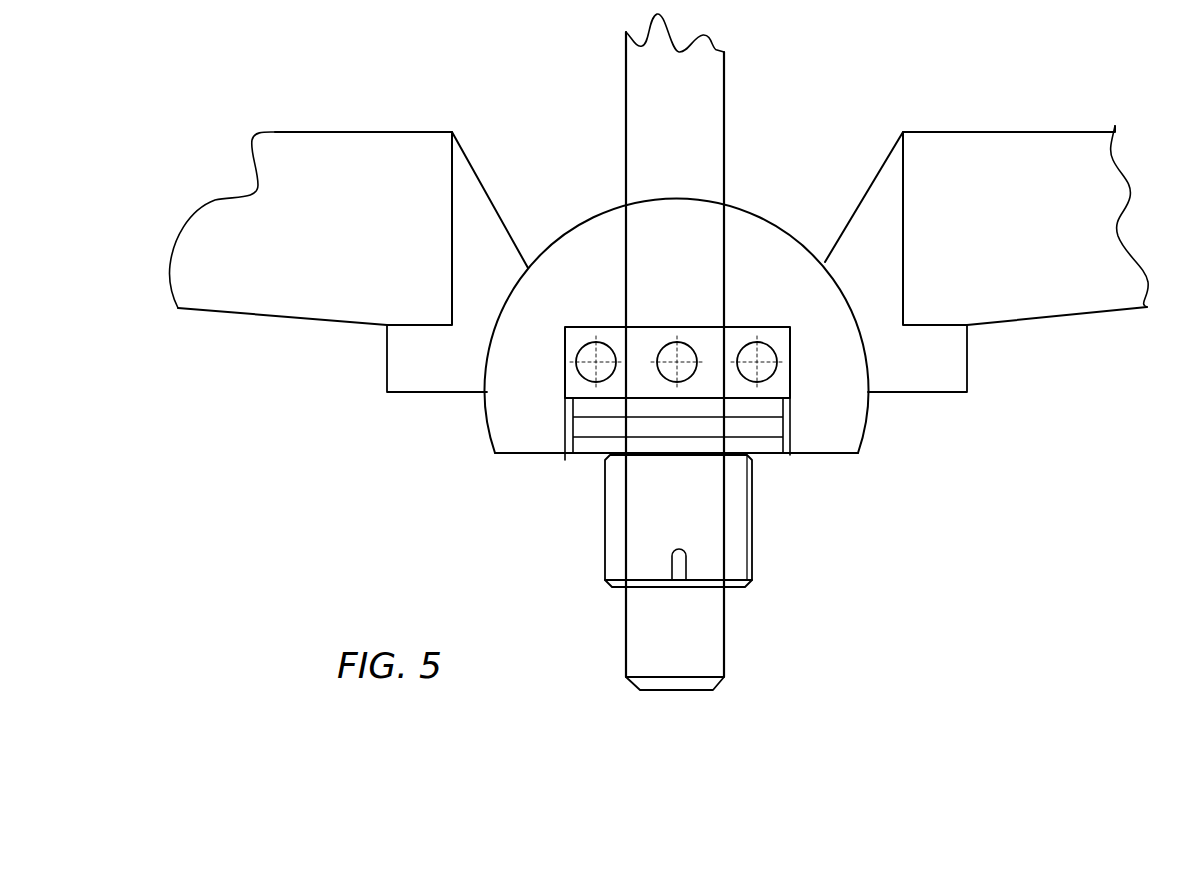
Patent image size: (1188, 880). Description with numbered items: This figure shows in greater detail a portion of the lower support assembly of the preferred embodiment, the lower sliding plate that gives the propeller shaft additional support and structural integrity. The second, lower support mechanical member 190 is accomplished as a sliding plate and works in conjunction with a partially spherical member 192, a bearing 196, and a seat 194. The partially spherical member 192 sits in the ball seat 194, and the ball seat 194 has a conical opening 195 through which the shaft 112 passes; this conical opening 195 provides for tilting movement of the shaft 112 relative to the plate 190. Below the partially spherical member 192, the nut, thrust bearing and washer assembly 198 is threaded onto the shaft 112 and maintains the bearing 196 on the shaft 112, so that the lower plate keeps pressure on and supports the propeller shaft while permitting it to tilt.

The shaft 112 is at (665, 620).
The lower support mechanical member 190 is at (290, 295).
The partially spherical member 192 is at (850, 412).
The seat 194 is at (402, 370).
The conical opening 195 is at (860, 153).
The bearing 196 is at (777, 382).
The nut, thrust bearing and washer assembly 198 is at (740, 548).